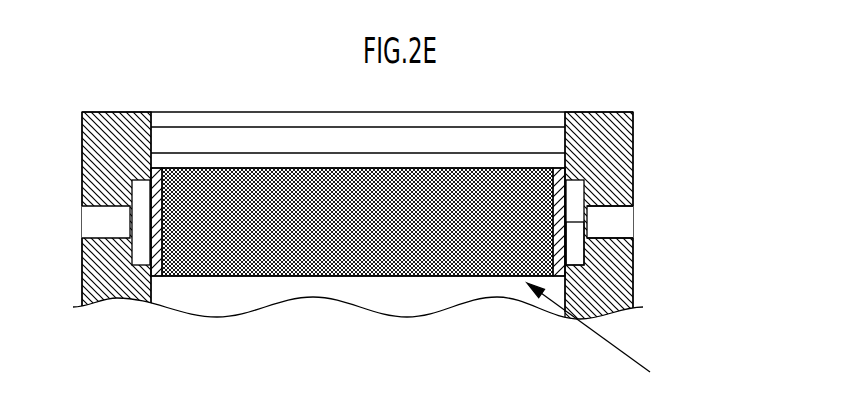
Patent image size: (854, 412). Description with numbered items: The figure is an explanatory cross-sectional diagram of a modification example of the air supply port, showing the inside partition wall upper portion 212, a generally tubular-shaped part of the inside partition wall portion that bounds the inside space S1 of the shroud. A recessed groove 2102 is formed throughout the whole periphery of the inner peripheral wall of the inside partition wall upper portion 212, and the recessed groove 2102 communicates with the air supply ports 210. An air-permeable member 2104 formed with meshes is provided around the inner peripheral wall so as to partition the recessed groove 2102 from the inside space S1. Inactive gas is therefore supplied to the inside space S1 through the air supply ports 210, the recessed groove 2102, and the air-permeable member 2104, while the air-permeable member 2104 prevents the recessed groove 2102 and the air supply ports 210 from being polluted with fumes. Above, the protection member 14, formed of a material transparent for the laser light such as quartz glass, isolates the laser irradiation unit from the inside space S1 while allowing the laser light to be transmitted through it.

The protection member 14 is at (533, 127).
The inside partition wall upper portion 212 is at (613, 111).
The recessed groove 2102 is at (586, 198).
The air supply port 210 is at (617, 238).
The air-permeable member 2104 is at (568, 252).
The inside space S1 is at (603, 337).